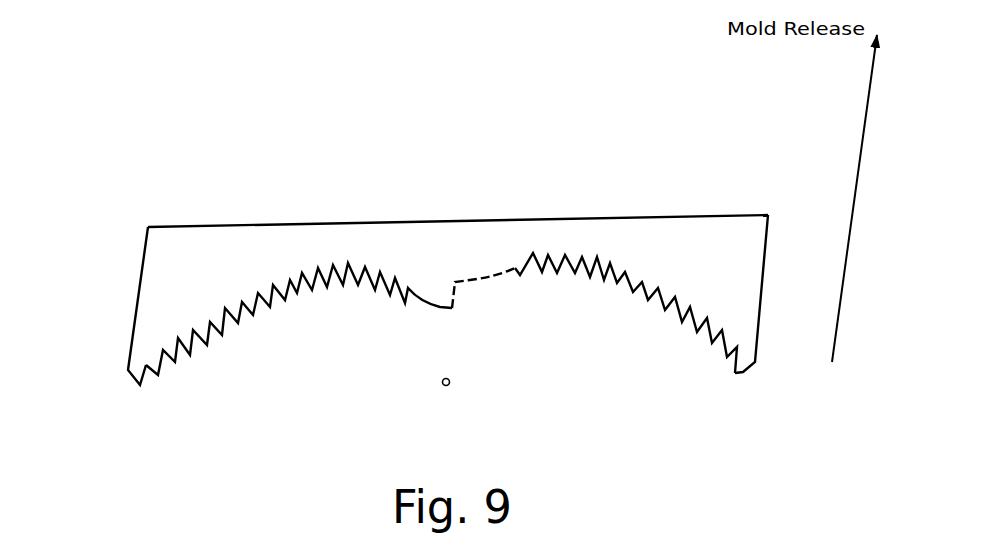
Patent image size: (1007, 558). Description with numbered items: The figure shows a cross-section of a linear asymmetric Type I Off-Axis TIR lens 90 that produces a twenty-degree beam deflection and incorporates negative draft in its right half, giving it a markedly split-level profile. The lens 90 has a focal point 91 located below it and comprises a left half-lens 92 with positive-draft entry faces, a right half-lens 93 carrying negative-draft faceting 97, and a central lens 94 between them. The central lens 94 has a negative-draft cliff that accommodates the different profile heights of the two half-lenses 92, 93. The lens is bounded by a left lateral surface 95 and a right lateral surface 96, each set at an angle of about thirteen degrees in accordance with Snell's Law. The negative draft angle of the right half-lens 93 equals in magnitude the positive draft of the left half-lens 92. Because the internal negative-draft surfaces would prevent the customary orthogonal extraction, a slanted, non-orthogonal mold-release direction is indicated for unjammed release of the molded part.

The Type I Off-Axis TIR lens 90 is at (193, 197).
The focal point 91 is at (435, 385).
The left half-lens 92 is at (299, 317).
The right half-lens 93 is at (626, 309).
The central lens 94 is at (460, 292).
The lateral surface 95 is at (132, 315).
The lateral surface 96 is at (770, 327).
The negative-draft faceting 97 is at (727, 367).